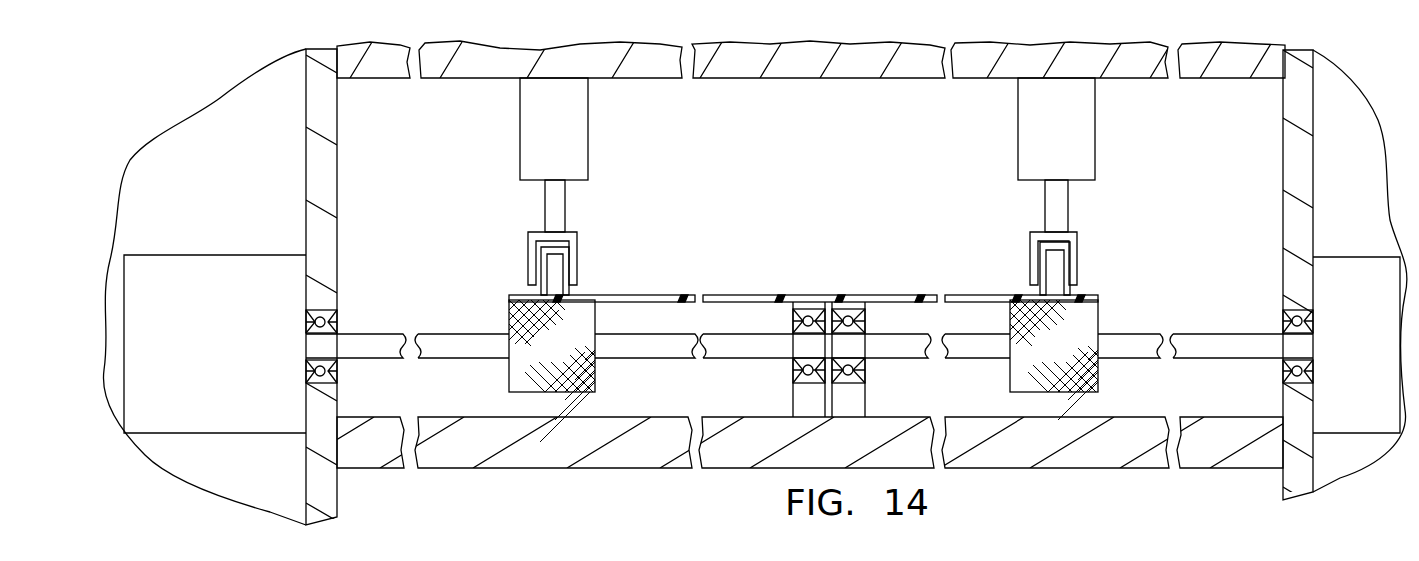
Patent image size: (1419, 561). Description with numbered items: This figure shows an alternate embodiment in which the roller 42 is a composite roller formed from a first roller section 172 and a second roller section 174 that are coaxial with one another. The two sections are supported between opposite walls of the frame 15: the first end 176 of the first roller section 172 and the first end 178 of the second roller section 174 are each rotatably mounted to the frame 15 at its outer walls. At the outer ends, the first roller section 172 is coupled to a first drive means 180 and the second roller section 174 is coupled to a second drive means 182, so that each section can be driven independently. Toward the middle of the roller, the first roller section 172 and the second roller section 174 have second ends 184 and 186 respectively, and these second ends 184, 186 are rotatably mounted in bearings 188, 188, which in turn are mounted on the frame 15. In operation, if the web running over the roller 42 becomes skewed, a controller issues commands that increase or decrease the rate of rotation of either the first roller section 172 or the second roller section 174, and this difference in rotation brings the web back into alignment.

The frame 15 is at (314, 157).
The roller 42 is at (725, 270).
The first roller section 172 is at (1118, 300).
The second roller section 174 is at (495, 305).
The first end of the first roller section 176 is at (1303, 347).
The first end of the second roller section 178 is at (312, 347).
The first drive means 180 is at (166, 270).
The second drive means 182 is at (1357, 267).
The second end of the first roller section 184 is at (845, 345).
The second end of the second roller section 186 is at (805, 345).
The bearings 188 is at (845, 378).